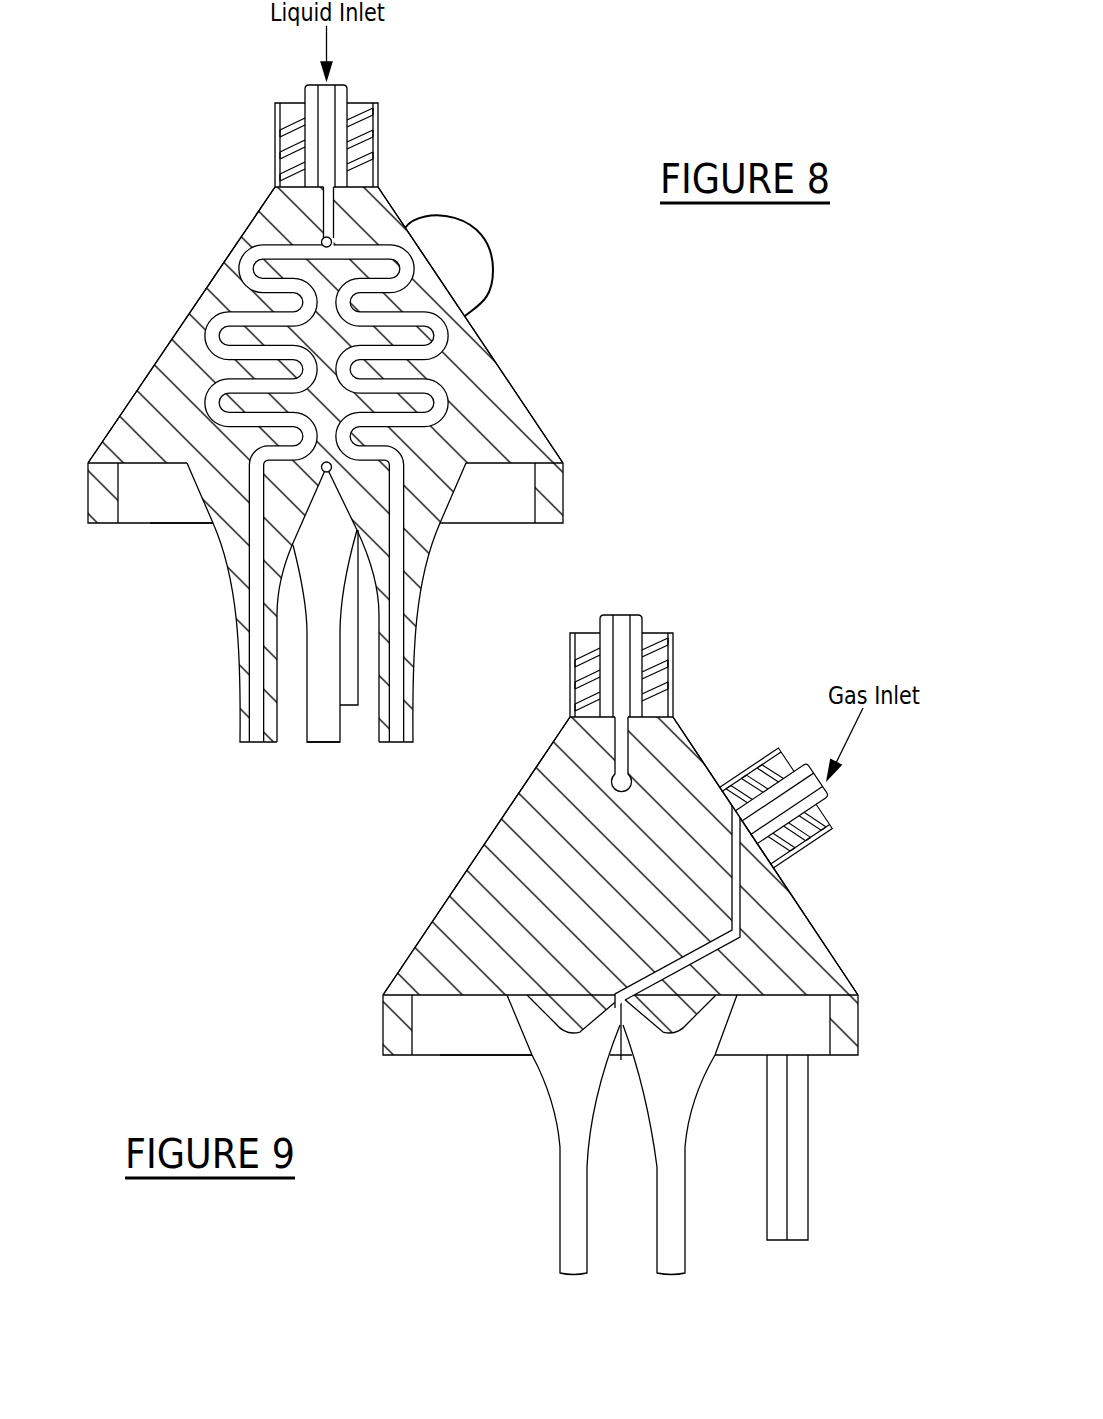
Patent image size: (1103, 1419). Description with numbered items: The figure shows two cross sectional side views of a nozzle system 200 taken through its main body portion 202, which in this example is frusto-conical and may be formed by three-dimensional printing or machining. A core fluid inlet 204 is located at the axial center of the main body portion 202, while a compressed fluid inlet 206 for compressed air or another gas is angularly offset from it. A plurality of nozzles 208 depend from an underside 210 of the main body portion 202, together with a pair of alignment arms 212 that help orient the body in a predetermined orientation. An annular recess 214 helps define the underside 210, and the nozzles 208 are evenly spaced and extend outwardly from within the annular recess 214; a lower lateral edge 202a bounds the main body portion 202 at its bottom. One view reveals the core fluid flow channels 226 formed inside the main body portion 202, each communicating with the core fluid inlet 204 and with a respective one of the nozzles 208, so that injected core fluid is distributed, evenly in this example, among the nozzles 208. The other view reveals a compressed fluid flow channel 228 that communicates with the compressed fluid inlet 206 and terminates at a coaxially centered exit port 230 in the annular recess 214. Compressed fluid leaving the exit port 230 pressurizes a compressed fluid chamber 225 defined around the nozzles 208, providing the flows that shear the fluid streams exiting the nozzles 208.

In FIG. 8, the nozzle system 200 is at (427, 69).
In FIG. 9, the nozzle system 200 is at (777, 630).
In FIG. 8, the main body portion 202 is at (480, 399).
In FIG. 9, the main body portion 202 is at (490, 925).
In FIG. 8, the lower lateral edge 202a is at (98, 513).
In FIG. 9, the lower lateral edge 202a is at (388, 1020).
In FIG. 8, the core fluid inlet 204 is at (310, 97).
In FIG. 9, the core fluid inlet 204 is at (637, 625).
In FIG. 8, the compressed fluid inlet 206 is at (477, 281).
In FIG. 9, the compressed fluid inlet 206 is at (800, 773).
In FIG. 8, the nozzles 208 is at (405, 647).
In FIG. 9, the nozzles 208 is at (567, 1257).
In FIG. 8, the underside 210 is at (130, 526).
In FIG. 9, the underside 210 is at (498, 1058).
In FIG. 8, the alignment arms 212 is at (348, 706).
In FIG. 9, the alignment arms 212 is at (793, 1240).
In FIG. 8, the annular recess 214 is at (500, 526).
In FIG. 9, the annular recess 214 is at (751, 1062).
In FIG. 8, the compressed fluid chamber 225 is at (173, 545).
In FIG. 9, the compressed fluid chamber 225 is at (471, 1064).
In FIG. 8, the core fluid flow channels 226 is at (246, 263).
In FIG. 9, the compressed fluid flow channel 228 is at (733, 912).
In FIG. 8, the exit port 230 is at (322, 469).
In FIG. 9, the exit port 230 is at (620, 1027).